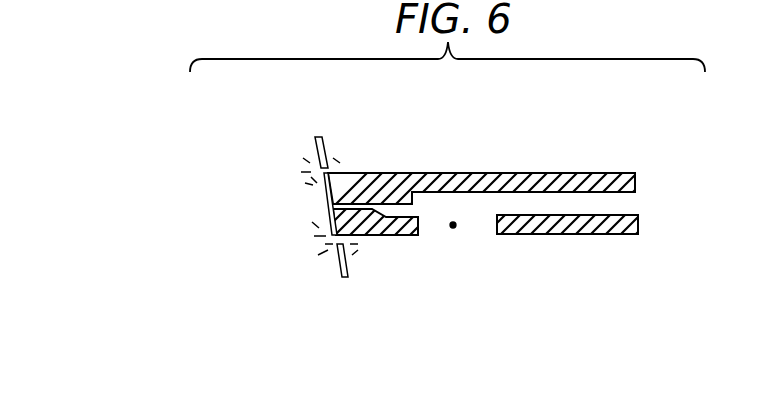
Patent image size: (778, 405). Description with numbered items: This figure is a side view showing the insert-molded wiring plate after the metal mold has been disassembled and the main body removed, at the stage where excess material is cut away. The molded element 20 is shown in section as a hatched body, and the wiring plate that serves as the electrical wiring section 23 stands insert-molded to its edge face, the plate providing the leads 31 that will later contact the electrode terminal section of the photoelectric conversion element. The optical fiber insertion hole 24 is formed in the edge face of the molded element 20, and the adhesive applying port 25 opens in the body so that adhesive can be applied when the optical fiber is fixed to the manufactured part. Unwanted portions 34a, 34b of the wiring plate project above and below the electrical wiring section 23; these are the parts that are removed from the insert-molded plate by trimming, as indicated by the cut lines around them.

The molded element 20 is at (578, 156).
The electrical wiring section 23 is at (329, 213).
The optical fiber insertion hole 24 is at (323, 207).
The adhesive applying port 25 is at (453, 228).
The leads 31 is at (285, 222).
The unwanted portion 34a is at (313, 139).
The unwanted portion 34b is at (337, 262).